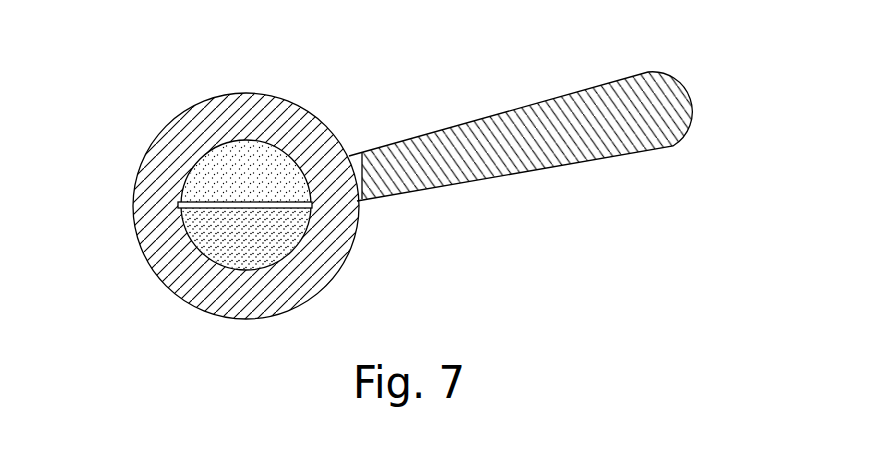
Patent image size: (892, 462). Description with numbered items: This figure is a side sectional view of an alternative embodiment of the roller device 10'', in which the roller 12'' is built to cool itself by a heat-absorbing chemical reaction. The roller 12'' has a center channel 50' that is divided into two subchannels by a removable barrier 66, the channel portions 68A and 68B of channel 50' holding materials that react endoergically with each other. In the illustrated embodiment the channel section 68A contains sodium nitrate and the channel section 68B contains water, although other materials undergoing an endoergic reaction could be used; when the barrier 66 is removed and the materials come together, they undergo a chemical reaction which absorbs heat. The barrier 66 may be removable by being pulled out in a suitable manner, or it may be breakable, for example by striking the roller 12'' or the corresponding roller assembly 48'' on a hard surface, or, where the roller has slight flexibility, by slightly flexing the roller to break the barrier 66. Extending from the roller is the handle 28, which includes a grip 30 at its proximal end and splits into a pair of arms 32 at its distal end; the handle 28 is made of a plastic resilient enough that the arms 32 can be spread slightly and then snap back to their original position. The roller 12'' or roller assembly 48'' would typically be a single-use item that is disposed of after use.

The roller device 10'' is at (403, 189).
The roller 12'' is at (246, 214).
The handle 28 is at (526, 129).
The grip 30 is at (563, 170).
The arms 32 is at (365, 200).
The roller assembly 48'' is at (246, 234).
The center channel 50' is at (244, 206).
The removable barrier 66 is at (308, 212).
The channel portion 68A is at (265, 152).
The channel portion 68B is at (268, 262).